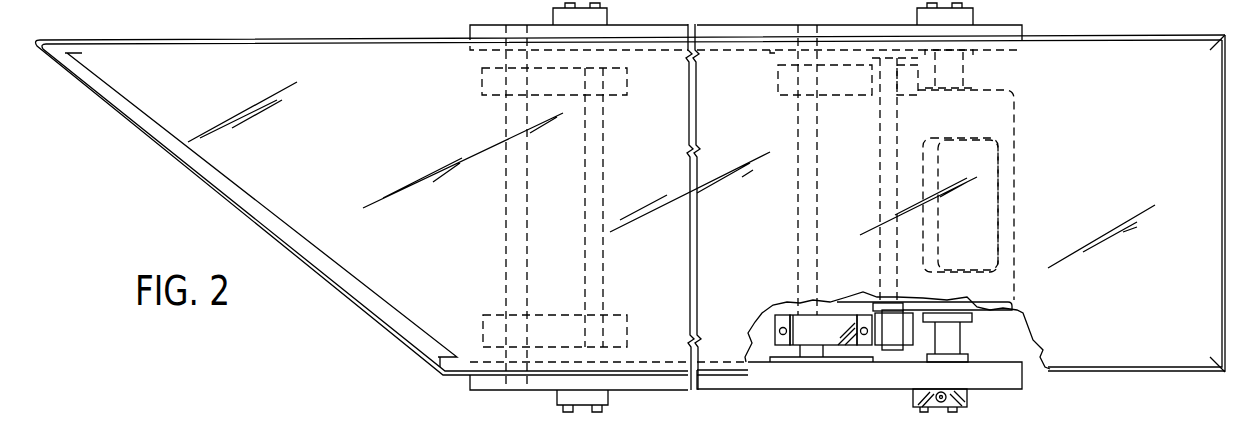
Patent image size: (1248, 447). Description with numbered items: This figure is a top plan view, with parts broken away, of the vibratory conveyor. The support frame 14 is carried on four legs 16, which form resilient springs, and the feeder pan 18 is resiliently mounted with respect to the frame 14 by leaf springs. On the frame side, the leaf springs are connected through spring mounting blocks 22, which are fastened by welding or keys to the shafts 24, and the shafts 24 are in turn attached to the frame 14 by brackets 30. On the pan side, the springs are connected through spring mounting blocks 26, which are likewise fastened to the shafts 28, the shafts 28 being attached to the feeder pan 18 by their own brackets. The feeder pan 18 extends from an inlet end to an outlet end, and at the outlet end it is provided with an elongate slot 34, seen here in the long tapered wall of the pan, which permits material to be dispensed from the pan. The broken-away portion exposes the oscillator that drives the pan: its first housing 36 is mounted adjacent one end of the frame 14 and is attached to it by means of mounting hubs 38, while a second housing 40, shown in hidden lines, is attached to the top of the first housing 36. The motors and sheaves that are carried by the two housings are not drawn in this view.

The support frame 14 is at (1001, 380).
The legs 16 is at (947, 404).
The feeder pan 18 is at (1103, 339).
The spring mounting blocks 22 is at (777, 341).
The shafts 24 is at (810, 311).
The spring mounting blocks 26 is at (890, 322).
The shafts 28 is at (890, 302).
The brackets 30 is at (860, 362).
The elongate slot 34 is at (296, 232).
The first housing 36 is at (990, 312).
The mounting hubs 38 is at (953, 338).
The second housing 40 is at (1000, 210).